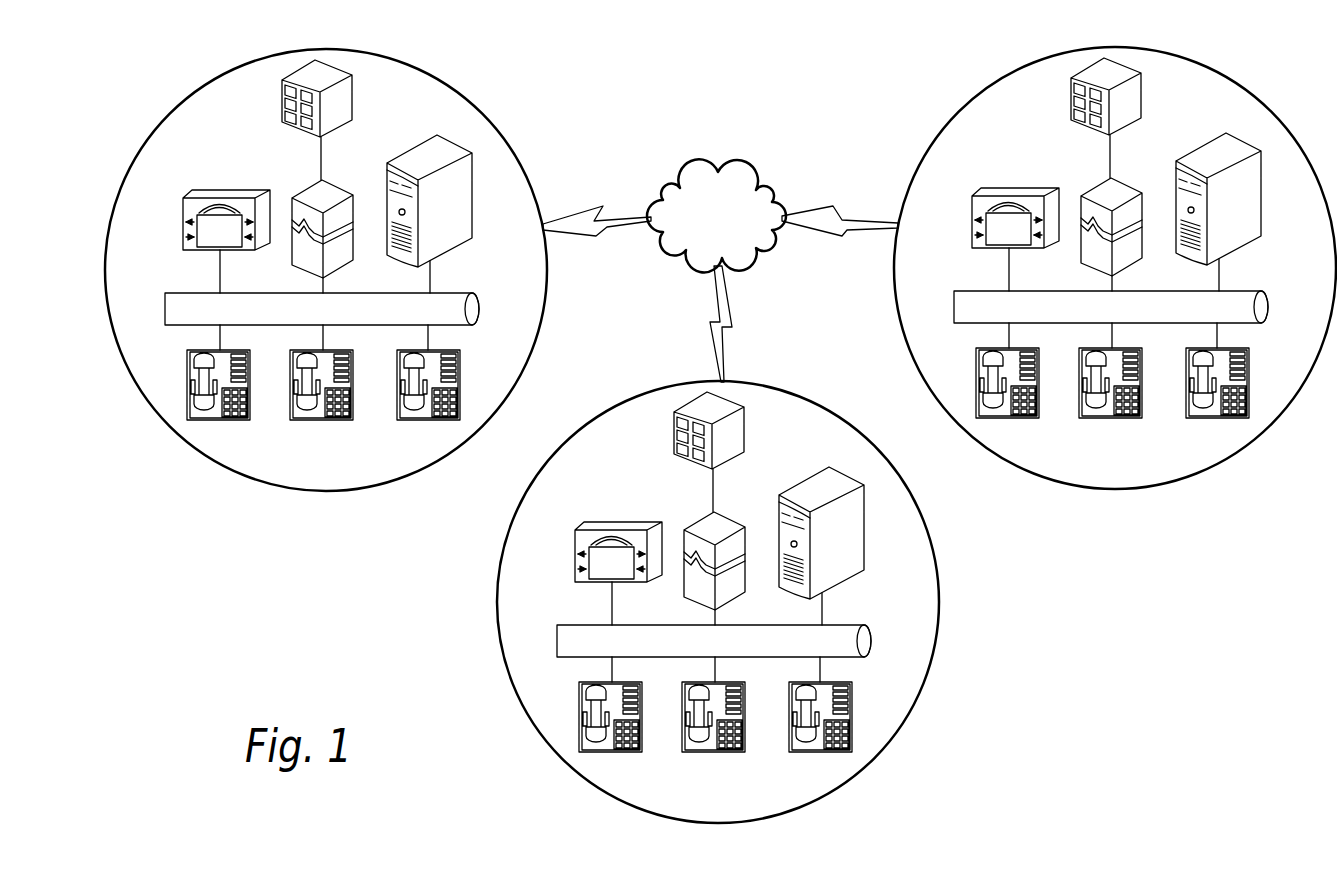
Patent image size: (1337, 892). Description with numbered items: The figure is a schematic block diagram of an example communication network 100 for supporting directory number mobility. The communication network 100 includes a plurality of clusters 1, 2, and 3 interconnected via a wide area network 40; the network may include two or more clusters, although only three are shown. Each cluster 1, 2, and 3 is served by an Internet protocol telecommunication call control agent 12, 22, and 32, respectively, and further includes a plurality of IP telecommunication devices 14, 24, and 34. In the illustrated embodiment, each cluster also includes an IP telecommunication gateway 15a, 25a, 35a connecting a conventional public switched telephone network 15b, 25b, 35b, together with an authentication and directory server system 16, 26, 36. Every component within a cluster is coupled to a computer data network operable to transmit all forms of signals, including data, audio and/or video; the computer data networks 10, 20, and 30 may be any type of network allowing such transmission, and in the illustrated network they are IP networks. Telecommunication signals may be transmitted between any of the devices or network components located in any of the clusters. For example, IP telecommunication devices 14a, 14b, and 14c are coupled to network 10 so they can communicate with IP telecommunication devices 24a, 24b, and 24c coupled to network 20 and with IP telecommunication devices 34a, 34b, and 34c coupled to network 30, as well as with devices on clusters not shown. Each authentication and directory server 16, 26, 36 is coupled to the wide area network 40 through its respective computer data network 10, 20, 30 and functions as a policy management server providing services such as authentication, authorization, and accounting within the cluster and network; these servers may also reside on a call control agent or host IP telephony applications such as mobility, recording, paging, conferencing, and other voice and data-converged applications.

The communication network 100 is at (418, 555).
The cluster 1 is at (505, 137).
The cluster 2 is at (1095, 280).
The cluster 3 is at (744, 579).
The wide area network 40 is at (740, 166).
The computer data network 10 is at (167, 303).
The IPT call control agent 12 is at (183, 215).
The IP telecommunication devices 14 is at (180, 382).
The IP telecommunication device 14a is at (214, 421).
The IP telecommunication device 14b is at (322, 421).
The IP telecommunication device 14c is at (417, 421).
The IP telecommunication gateway 15a is at (335, 193).
The public switched telephone network 15b is at (283, 100).
The authentication and directory server 16 is at (445, 233).
The computer data network 20 is at (1087, 289).
The IPT call control agent 22 is at (987, 239).
The IP telecommunication devices 24 is at (1070, 436).
The IP telecommunication device 24a is at (996, 418).
The IP telecommunication device 24b is at (1119, 437).
The IP telecommunication device 24c is at (1236, 415).
The IP telecommunication gateway 25a is at (1124, 218).
The public switched telephone network 25b is at (1070, 106).
The authentication and directory server 26 is at (1243, 212).
The computer data network 30 is at (688, 619).
The IPT call control agent 32 is at (588, 573).
The IP telecommunication devices 34 is at (773, 755).
The IP telecommunication device 34a is at (599, 751).
The IP telecommunication device 34b is at (774, 755).
The IP telecommunication device 34c is at (853, 737).
The IP telecommunication gateway 35a is at (730, 546).
The public switched telephone network 35b is at (673, 441).
The authentication and directory server 36 is at (845, 546).